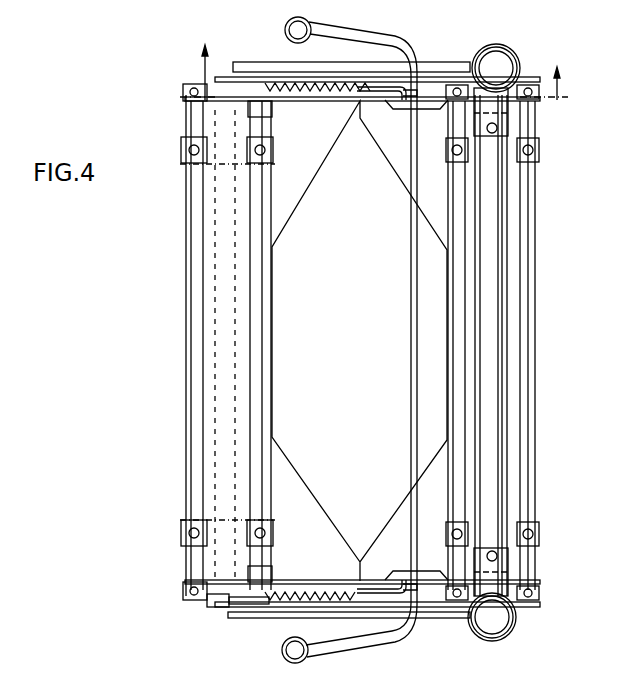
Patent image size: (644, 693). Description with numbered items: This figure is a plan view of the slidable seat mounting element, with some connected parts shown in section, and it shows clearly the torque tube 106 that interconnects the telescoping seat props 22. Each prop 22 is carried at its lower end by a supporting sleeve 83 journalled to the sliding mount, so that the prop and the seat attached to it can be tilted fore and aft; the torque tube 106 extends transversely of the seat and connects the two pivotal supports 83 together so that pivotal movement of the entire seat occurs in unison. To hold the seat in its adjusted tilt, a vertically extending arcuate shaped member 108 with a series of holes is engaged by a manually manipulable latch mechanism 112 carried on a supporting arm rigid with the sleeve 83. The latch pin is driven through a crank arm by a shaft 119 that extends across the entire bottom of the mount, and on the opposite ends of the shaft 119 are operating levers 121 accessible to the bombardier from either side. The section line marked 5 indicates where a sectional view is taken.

The section line 5- 5 is at (379, 72).
The telescoping seat prop 22 is at (492, 634).
The supporting sleeve 83 is at (517, 625).
The torque tube 106 is at (497, 412).
The arcuate shaped member 108 is at (218, 608).
The latch mechanism 112 is at (366, 595).
The shaft 119 is at (410, 353).
The operating lever 121 is at (351, 641).